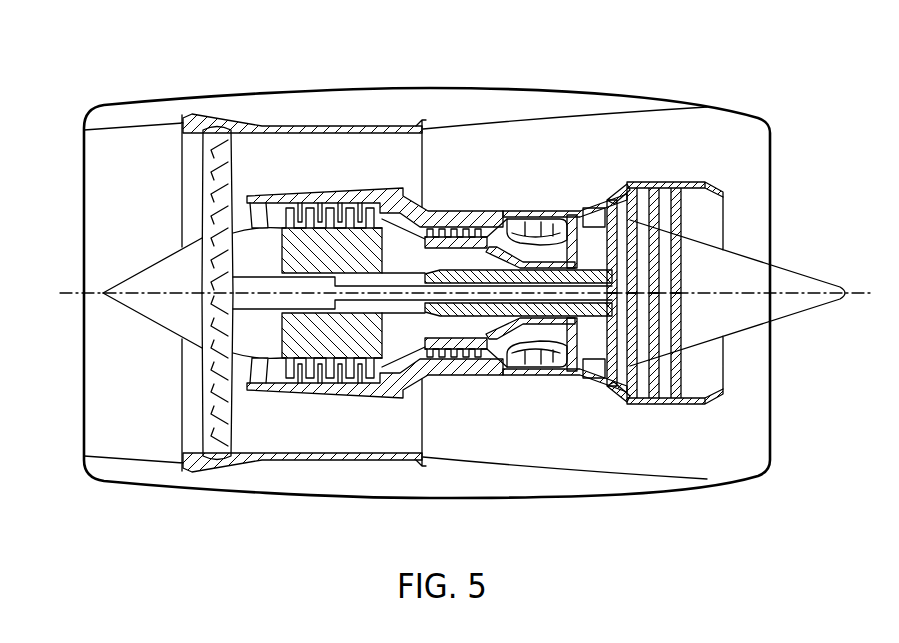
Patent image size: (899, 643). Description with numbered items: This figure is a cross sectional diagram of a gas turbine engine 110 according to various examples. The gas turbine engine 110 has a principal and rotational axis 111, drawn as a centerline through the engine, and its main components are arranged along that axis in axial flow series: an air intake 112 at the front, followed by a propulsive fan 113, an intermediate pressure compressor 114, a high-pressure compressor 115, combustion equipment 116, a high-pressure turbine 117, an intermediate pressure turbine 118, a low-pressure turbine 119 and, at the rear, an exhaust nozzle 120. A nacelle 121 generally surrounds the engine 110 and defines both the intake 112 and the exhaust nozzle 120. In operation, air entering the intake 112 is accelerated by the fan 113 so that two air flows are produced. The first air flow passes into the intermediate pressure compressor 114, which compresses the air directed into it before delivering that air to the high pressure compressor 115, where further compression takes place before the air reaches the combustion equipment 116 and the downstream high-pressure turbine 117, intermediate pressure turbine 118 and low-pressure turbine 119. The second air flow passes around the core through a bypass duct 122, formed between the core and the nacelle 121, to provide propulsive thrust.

The gas turbine engine 110 is at (74, 174).
The principal and rotational axis 111 is at (97, 293).
The air intake 112 is at (150, 122).
The propulsive fan 113 is at (213, 418).
The intermediate pressure compressor 114 is at (350, 378).
The high-pressure compressor 115 is at (450, 230).
The combustion equipment 116 is at (506, 368).
The high-pressure turbine 117 is at (575, 371).
The intermediate pressure turbine 118 is at (612, 205).
The low-pressure turbine 119 is at (626, 400).
The exhaust nozzle 120 is at (768, 470).
The nacelle 121 is at (585, 102).
The bypass duct 122 is at (392, 173).